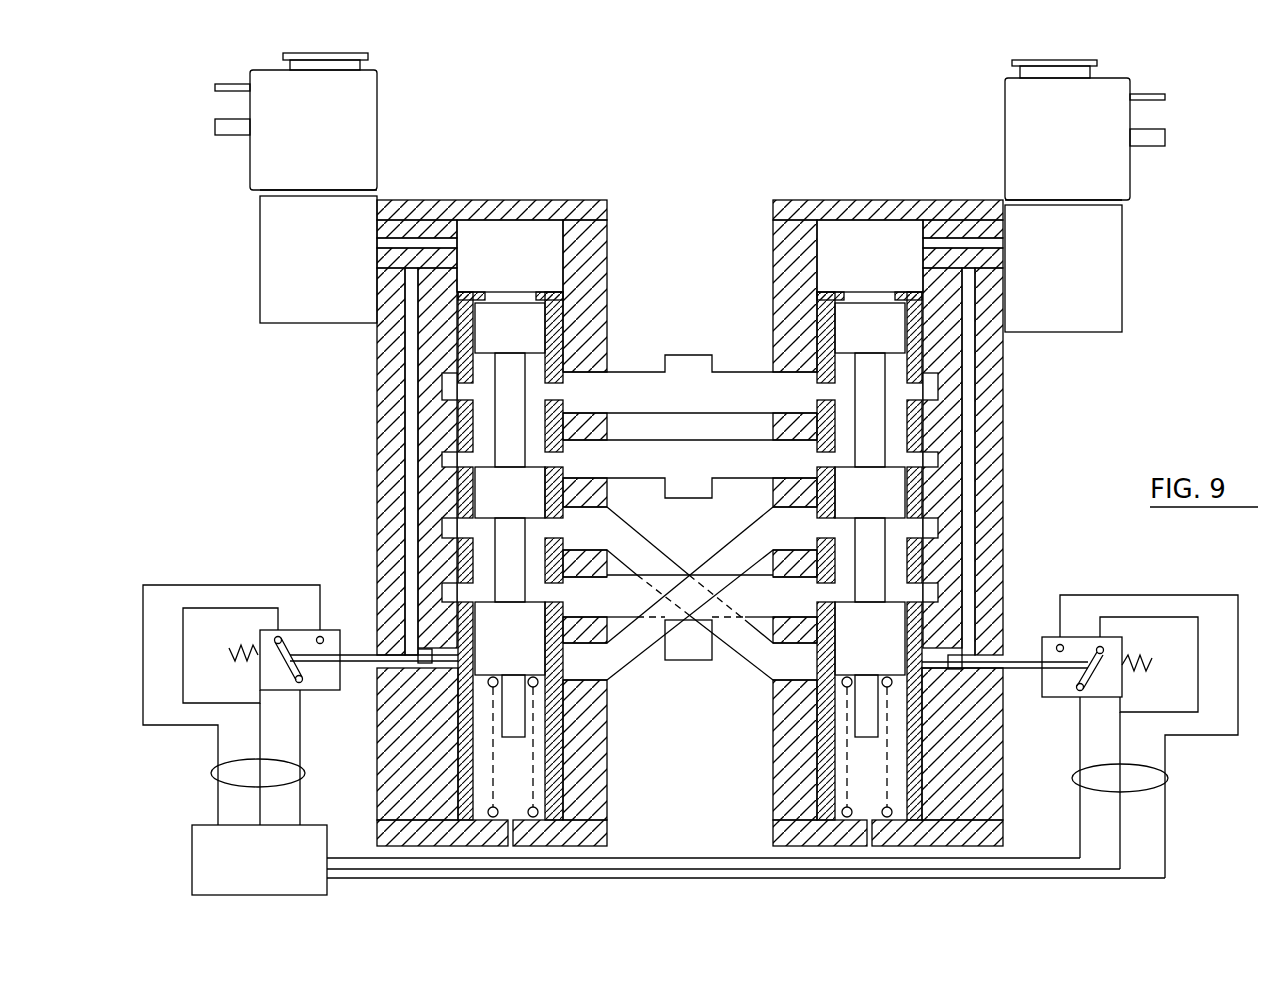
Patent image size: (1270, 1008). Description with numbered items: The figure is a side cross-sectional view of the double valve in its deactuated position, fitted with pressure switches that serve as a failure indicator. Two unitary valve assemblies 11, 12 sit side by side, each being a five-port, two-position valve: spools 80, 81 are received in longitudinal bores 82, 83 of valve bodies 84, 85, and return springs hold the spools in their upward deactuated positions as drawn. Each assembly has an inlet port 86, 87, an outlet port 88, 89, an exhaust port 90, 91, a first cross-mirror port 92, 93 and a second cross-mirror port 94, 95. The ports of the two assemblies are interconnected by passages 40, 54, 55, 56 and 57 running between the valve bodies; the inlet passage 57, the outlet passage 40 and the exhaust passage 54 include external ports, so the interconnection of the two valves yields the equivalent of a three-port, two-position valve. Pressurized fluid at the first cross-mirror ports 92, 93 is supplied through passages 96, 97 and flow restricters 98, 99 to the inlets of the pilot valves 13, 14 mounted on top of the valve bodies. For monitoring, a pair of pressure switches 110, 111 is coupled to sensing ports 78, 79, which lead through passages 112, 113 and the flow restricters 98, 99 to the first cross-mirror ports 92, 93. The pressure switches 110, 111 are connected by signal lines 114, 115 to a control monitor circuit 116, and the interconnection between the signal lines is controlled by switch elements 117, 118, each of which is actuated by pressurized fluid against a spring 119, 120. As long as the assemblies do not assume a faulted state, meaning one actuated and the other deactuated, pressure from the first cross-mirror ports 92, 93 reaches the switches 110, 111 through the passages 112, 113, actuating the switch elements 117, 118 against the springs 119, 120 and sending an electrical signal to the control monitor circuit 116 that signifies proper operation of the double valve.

The valve assembly 11 is at (476, 481).
The valve assembly 12 is at (903, 470).
The pilot valve 13 is at (377, 146).
The pilot valve 14 is at (1005, 125).
The outlet passage 40 is at (692, 446).
The exhaust passage 54 is at (735, 372).
The passage 55 is at (738, 546).
The passage 56 is at (652, 552).
The inlet passage 57 is at (697, 662).
The sensing port 78 is at (377, 650).
The sensing port 79 is at (1003, 655).
The spool 80 is at (514, 302).
The spool 81 is at (876, 304).
The longitudinal bore 82 is at (482, 242).
The longitudinal bore 83 is at (866, 252).
The valve body 84 is at (607, 243).
The valve body 85 is at (773, 247).
The inlet port 86 is at (601, 611).
The inlet port 87 is at (814, 611).
The outlet port 88 is at (601, 475).
The outlet port 89 is at (814, 475).
The exhaust port 90 is at (604, 404).
The exhaust port 91 is at (814, 404).
The first cross-mirror port 92 is at (601, 674).
The first cross-mirror port 93 is at (814, 674).
The second cross-mirror port 94 is at (601, 541).
The second cross-mirror port 95 is at (814, 541).
The passage 96 is at (377, 420).
The passage 97 is at (1003, 420).
The flow restricter 98 is at (425, 670).
The flow restricter 99 is at (983, 672).
The pressure switch 110 is at (320, 630).
The pressure switch 111 is at (1060, 637).
The passage 112 is at (377, 692).
The passage 113 is at (955, 670).
The signal line 114 is at (210, 773).
The signal line 115 is at (1168, 778).
The control monitor circuit 116 is at (282, 870).
The switch element 117 is at (285, 673).
The switch element 118 is at (1098, 680).
The spring 119 is at (233, 650).
The spring 120 is at (1148, 650).